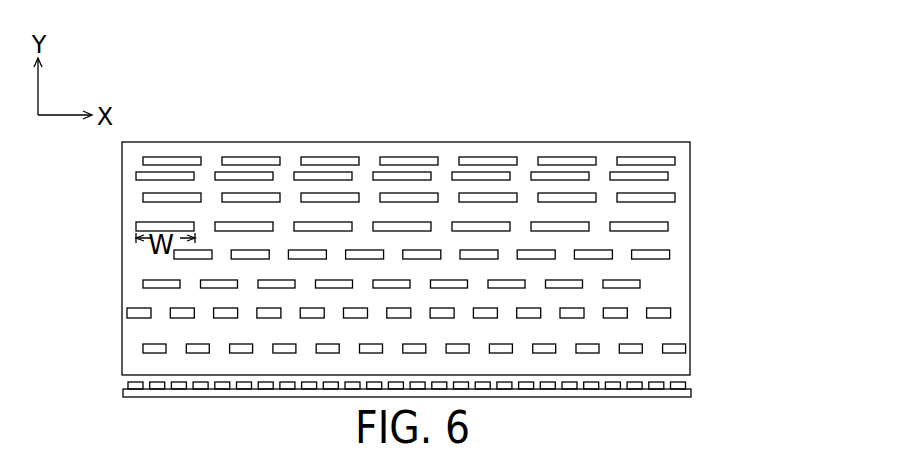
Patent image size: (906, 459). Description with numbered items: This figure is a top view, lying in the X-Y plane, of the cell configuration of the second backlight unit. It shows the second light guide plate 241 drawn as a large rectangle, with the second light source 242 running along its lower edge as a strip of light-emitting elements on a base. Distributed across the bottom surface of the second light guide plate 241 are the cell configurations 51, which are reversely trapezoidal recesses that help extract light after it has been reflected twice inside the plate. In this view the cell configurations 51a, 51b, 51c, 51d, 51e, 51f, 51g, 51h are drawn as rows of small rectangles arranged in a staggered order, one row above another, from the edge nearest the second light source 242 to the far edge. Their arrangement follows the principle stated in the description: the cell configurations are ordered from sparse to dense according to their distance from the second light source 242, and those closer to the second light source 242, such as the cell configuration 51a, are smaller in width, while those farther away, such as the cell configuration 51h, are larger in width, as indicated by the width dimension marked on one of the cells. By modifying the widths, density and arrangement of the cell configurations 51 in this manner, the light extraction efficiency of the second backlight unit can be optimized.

The cell configuration 51 is at (457, 236).
The cell configuration 51a is at (686, 348).
The cell configuration 51b is at (671, 313).
The cell configuration 51c is at (641, 284).
The cell configuration 51d is at (669, 254).
The cell configuration 51e is at (669, 226).
The cell configuration 51f is at (676, 197).
The cell configuration 51g is at (669, 176).
The cell configuration 51h is at (676, 161).
The second light guide plate 241 is at (113, 207).
The second light source 242 is at (114, 397).